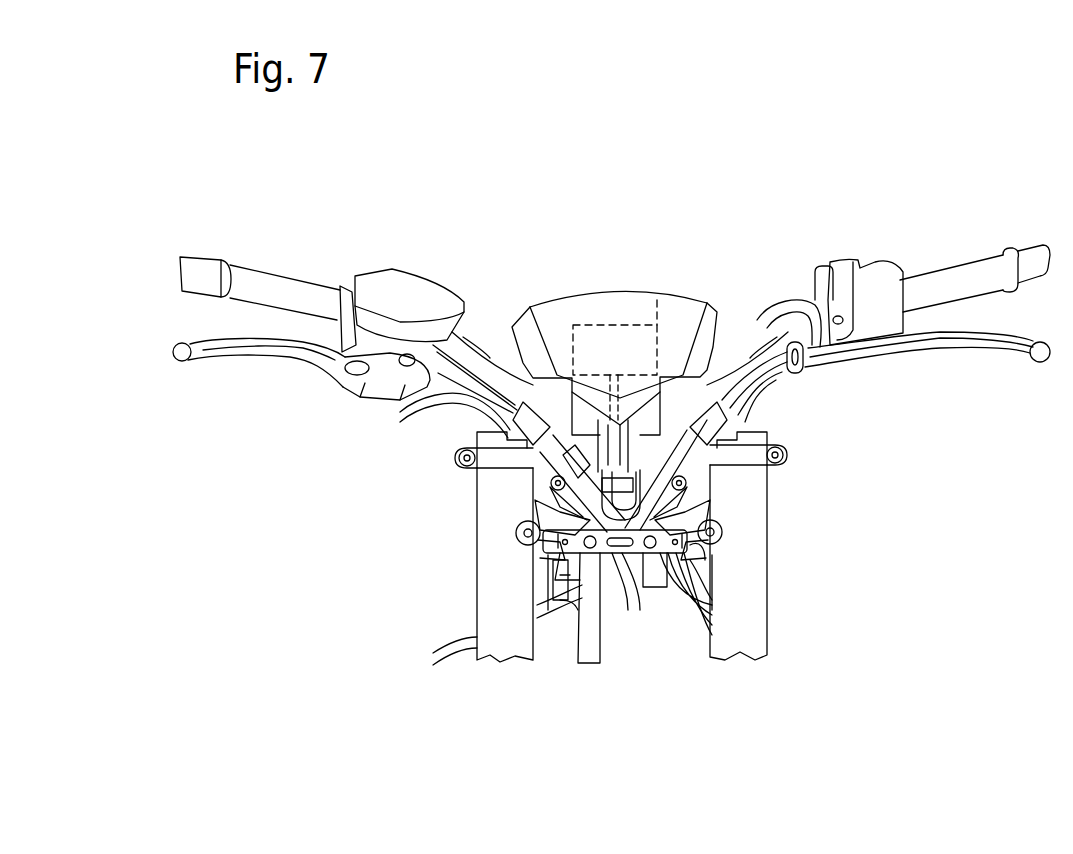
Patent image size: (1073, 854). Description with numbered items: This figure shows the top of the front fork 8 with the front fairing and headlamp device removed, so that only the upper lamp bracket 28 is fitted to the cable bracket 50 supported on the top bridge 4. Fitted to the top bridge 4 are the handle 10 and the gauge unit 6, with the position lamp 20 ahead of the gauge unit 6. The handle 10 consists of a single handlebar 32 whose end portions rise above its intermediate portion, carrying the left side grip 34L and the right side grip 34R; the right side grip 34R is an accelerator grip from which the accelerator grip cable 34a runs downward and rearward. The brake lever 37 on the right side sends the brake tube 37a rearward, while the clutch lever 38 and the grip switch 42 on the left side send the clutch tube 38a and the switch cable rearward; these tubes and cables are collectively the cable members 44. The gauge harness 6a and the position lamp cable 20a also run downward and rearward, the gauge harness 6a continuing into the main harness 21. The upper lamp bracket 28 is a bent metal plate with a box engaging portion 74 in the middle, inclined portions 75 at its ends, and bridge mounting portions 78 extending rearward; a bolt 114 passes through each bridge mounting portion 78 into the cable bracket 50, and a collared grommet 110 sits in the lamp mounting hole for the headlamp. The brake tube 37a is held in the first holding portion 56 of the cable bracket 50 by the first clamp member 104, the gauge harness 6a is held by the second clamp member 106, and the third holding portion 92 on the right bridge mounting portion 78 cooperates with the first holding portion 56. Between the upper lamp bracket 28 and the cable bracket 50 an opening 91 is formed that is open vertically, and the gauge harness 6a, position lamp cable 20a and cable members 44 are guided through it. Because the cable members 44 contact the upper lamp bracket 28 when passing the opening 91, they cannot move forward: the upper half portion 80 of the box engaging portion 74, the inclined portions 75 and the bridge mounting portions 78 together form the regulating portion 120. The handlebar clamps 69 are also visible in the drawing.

The handle 10 is at (638, 135).
The right side grip 34R is at (310, 287).
The handlebar 32 is at (470, 340).
The left side grip 34L is at (928, 275).
The accelerator grip cable 34a is at (447, 337).
The cable member 44 is at (570, 326).
The grip switch 42 is at (860, 278).
The clutch lever 38 is at (973, 345).
The clutch tube 38a is at (740, 362).
The gauge unit 6 is at (658, 300).
The gauge harness 6a is at (670, 377).
The position lamp 20 is at (622, 397).
The position lamp cable 20a is at (607, 380).
The top bridge 4 is at (520, 377).
The brake lever 37 is at (250, 343).
The brake tube 37a is at (437, 390).
The handlebar clamp 69 is at (500, 418).
The front fork 8 is at (488, 647).
The second clamp member 106 is at (783, 467).
The first holding portion 56 is at (540, 462).
The first clamp member 104 is at (557, 488).
The bolt 114 is at (545, 520).
The collared grommet 110 is at (540, 540).
The cable bracket 50 is at (722, 527).
The third holding portion 92 is at (537, 582).
The bridge mounting portion 78 is at (717, 514).
The regulating portion 120 is at (684, 659).
The opening 91 is at (715, 565).
The inclined portion 75 is at (737, 568).
The box engaging portion 74 is at (600, 562).
The upper half portion 80 is at (625, 612).
The upper lamp bracket 28 is at (658, 587).
The main harness 21 is at (697, 632).